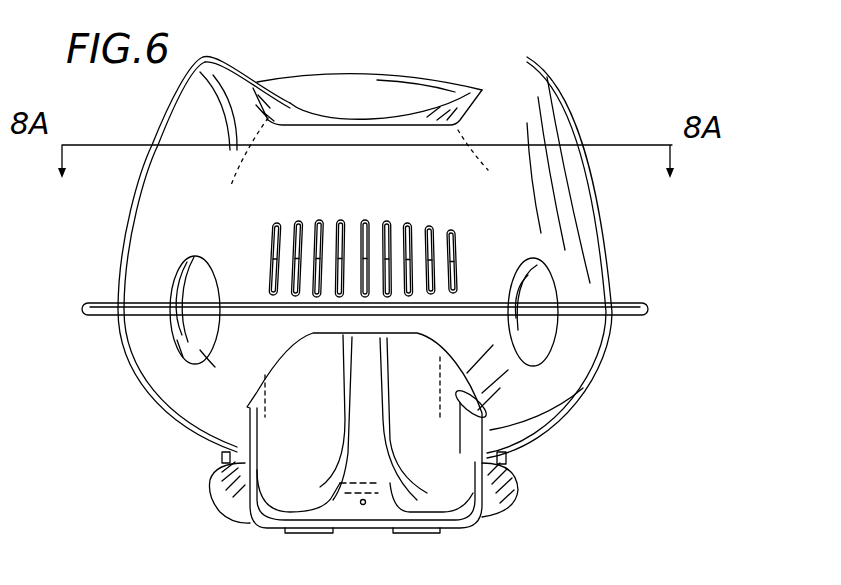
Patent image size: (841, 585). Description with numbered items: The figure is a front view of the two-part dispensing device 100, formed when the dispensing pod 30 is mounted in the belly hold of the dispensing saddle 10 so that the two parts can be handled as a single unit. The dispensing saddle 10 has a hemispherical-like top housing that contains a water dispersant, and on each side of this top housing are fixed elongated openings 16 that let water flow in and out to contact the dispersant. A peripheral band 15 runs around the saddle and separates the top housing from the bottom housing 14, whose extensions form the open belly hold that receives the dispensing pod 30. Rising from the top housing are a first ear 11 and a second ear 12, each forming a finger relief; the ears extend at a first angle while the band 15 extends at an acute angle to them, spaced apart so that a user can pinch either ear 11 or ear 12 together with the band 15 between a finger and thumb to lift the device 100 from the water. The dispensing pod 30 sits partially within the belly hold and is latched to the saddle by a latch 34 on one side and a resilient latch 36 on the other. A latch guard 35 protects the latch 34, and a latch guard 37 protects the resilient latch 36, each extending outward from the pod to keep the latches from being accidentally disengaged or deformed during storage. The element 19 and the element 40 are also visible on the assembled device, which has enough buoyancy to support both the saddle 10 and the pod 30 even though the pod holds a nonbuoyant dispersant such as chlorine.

The dispensing saddle 10 is at (125, 245).
The first ear 11 is at (493, 72).
The second ear 12 is at (242, 72).
The bottom housing 14 is at (587, 392).
The peripheral band 15 is at (641, 302).
The elongated openings 16 is at (277, 230).
The ring loop 19 is at (486, 412).
The dispensing pod 30 is at (450, 478).
The latch 34 is at (221, 460).
The latch guard 35 is at (213, 495).
The resilient latch 36 is at (508, 456).
The latch guard 37 is at (505, 503).
The pin 40 is at (361, 506).
The two-part dispensing device 100 is at (676, 267).